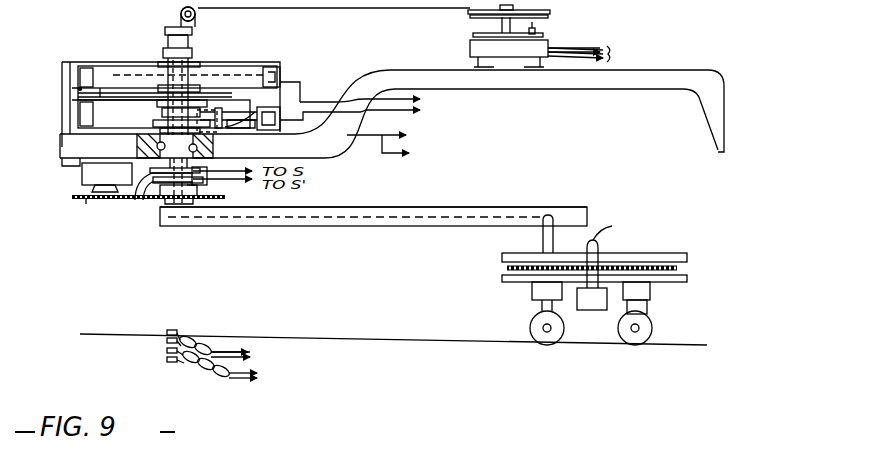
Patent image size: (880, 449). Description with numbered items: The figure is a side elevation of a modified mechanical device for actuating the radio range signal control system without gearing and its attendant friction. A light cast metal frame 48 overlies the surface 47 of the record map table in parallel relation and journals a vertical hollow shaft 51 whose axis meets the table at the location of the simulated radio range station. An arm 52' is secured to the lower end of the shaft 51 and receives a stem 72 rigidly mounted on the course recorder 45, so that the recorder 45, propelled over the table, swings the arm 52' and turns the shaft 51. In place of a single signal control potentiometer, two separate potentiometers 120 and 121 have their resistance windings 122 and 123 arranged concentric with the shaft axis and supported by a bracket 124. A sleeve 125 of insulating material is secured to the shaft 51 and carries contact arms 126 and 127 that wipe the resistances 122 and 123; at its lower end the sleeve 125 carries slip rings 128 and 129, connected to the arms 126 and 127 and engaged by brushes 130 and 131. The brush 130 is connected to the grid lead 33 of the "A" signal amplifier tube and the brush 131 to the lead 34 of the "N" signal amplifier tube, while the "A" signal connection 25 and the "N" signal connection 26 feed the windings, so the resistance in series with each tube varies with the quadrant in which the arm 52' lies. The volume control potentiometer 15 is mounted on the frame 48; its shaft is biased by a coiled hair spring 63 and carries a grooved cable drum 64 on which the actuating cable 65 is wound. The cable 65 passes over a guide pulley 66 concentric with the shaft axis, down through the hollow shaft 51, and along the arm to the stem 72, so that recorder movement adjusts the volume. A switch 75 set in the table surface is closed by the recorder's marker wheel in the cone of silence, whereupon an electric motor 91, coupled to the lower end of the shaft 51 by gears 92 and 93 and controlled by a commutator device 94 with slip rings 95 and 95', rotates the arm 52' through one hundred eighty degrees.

The volume control potentiometer 15 is at (470, 50).
The "A" signal output connection 25 is at (318, 92).
The "N" signal output connection 26 is at (303, 112).
The grid lead of "A" signal amplifier tube 33 is at (384, 157).
The lead of "N" signal amplifier tube 34 is at (388, 121).
The course recorder 45 is at (685, 280).
The map table surface 47 is at (393, 336).
The frame 48 is at (636, 86).
The vertical hollow shaft 51 is at (196, 63).
The arm 52' is at (373, 196).
The coiled hair spring 63 is at (538, 32).
The grooved cable drum 64 is at (550, 13).
The actuating cable 65 is at (322, 9).
The guide pulley 66 is at (198, 12).
The stem 72 is at (543, 242).
The switch 75 is at (177, 332).
The electric motor 91 is at (85, 175).
The gear 92 is at (86, 204).
The gear 93 is at (222, 197).
The commutator device 94 is at (238, 196).
The slip ring 95 is at (147, 196).
The slip ring 95' is at (150, 210).
The potentiometer 120 is at (72, 127).
The potentiometer 121 is at (284, 78).
The resistance winding 122 is at (248, 45).
The resistance winding 123 is at (70, 116).
The bracket 124 is at (78, 89).
The sleeve 125 is at (157, 84).
The contact arm 126 is at (102, 90).
The contact arm 127 is at (121, 88).
The slip ring 128 is at (140, 122).
The slip ring 129 is at (200, 112).
The brush 130 is at (260, 113).
The brush 131 is at (247, 113).